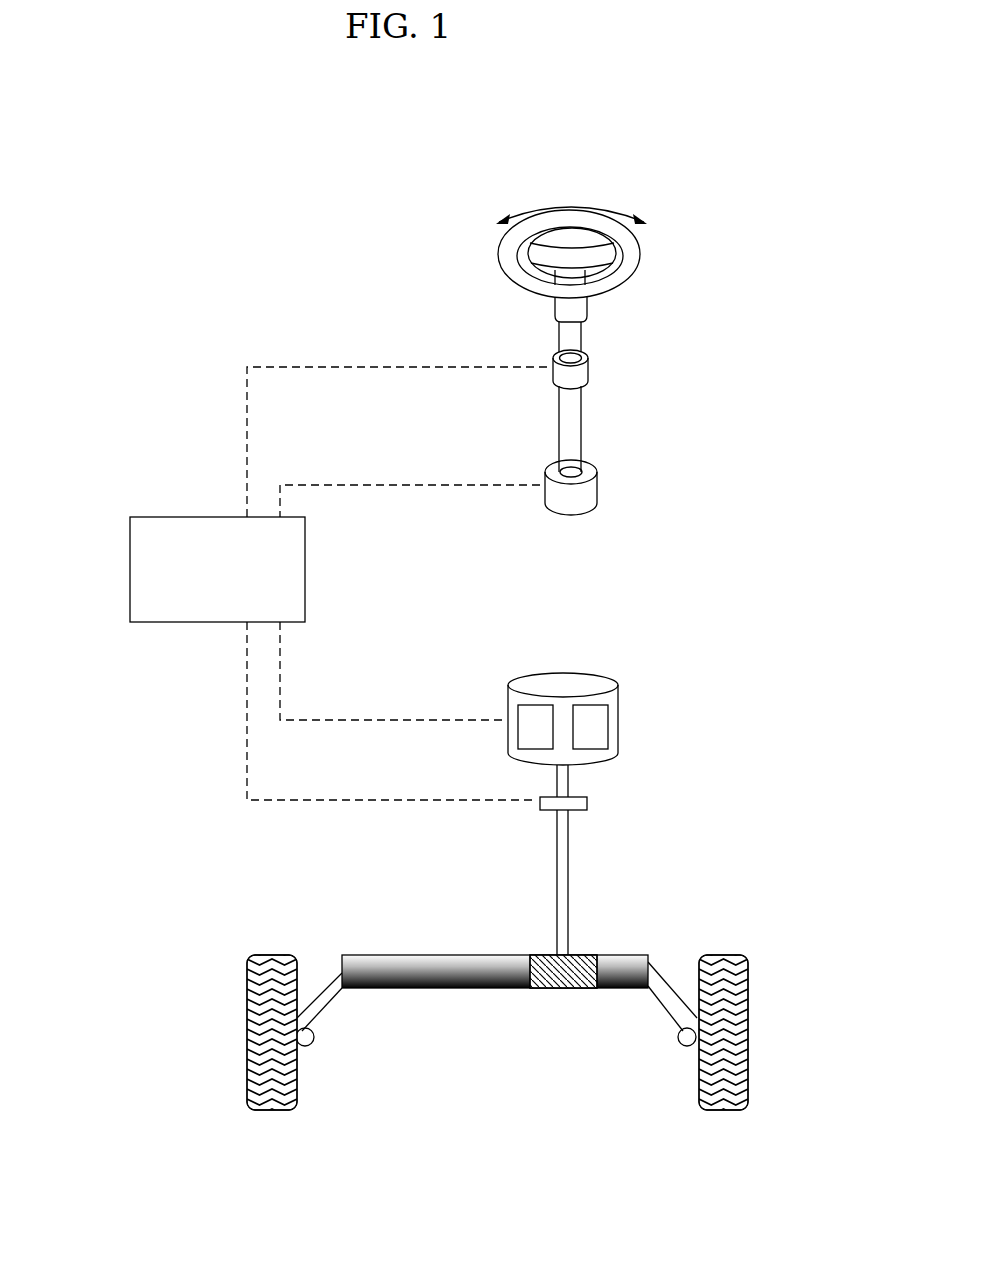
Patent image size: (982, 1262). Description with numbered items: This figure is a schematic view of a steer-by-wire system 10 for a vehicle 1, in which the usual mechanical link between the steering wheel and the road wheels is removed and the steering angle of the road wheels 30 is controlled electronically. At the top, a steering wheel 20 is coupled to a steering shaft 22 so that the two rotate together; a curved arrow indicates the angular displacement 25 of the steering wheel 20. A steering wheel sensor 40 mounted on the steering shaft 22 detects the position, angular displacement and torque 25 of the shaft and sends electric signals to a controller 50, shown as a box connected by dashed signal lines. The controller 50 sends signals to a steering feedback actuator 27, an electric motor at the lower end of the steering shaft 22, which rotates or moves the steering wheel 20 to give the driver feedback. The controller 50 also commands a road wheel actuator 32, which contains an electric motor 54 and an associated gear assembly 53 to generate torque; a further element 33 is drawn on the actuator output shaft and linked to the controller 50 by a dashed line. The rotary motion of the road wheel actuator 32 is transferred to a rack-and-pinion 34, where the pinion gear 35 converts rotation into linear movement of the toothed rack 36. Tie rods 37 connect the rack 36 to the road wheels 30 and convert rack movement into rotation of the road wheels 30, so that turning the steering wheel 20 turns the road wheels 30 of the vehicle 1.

The vehicle 1 is at (28, 247).
The steer-by-wire system 10 is at (734, 563).
The steering wheel 20 is at (635, 260).
The steering shaft 22 is at (575, 343).
The angular displacement 25 is at (602, 207).
The steering feedback actuator 27 is at (587, 493).
The road wheels 30 is at (248, 990).
The road wheel actuator 32 is at (599, 826).
The position sensor 33 is at (587, 802).
The rack-and-pinion 34 is at (576, 1006).
The pinion gear 35 is at (567, 968).
The rack 36 is at (500, 988).
The tie rods 37 is at (340, 975).
The steering wheel sensor 40 is at (580, 375).
The controller 50 is at (130, 585).
The gear assembly 53 is at (535, 727).
The electric motor 54 is at (590, 727).